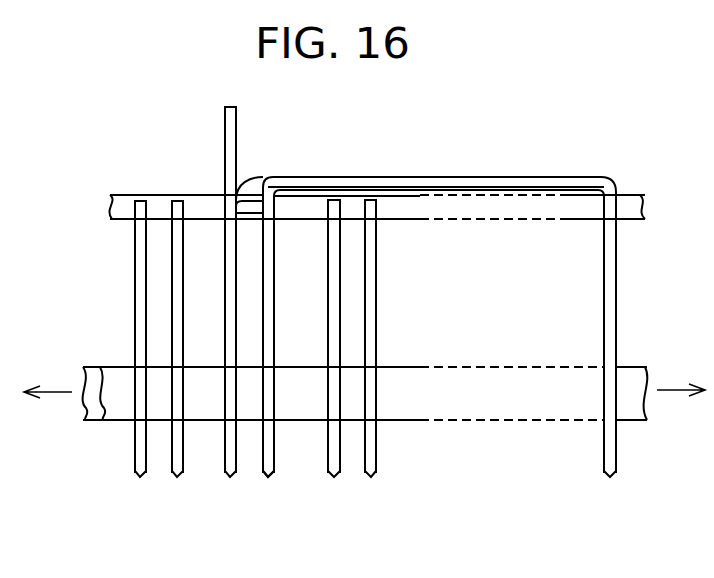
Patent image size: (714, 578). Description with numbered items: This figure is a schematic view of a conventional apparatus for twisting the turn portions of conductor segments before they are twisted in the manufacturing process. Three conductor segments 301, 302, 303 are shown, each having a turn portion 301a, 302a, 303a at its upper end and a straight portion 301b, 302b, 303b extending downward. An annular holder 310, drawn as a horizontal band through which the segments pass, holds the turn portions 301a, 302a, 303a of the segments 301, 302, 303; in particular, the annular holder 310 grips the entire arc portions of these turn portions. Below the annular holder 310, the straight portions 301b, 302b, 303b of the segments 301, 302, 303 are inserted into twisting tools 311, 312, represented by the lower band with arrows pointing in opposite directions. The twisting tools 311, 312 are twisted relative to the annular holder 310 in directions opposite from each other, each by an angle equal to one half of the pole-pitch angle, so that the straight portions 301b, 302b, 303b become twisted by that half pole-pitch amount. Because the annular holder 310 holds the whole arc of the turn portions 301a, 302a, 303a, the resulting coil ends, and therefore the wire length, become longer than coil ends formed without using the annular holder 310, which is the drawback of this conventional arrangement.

The conductor segment 301 is at (177, 262).
The turn portion 301a is at (178, 205).
The straight portion 301b is at (180, 478).
The conductor segment 302 is at (230, 270).
The turn portion 302a is at (250, 177).
The straight portion 302b is at (240, 480).
The conductor segment 303 is at (608, 260).
The turn portion 303a is at (552, 177).
The straight portion 303b is at (272, 476).
The annular holder 310 is at (393, 206).
The twisting tool 311 is at (637, 407).
The twisting tool 312 is at (93, 414).